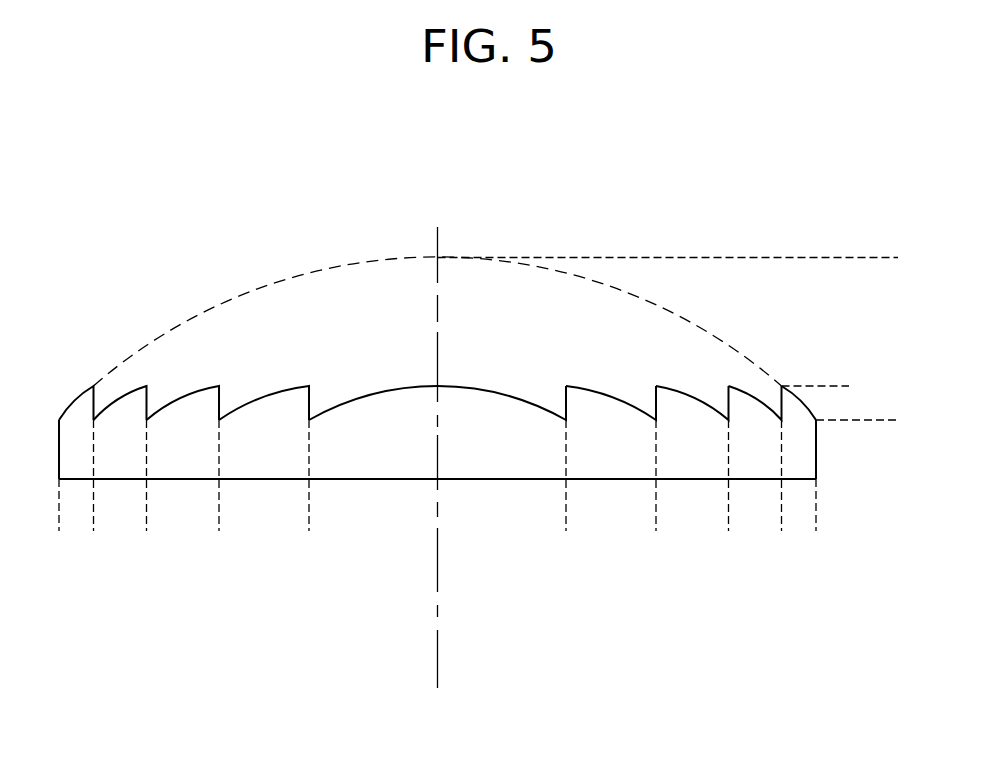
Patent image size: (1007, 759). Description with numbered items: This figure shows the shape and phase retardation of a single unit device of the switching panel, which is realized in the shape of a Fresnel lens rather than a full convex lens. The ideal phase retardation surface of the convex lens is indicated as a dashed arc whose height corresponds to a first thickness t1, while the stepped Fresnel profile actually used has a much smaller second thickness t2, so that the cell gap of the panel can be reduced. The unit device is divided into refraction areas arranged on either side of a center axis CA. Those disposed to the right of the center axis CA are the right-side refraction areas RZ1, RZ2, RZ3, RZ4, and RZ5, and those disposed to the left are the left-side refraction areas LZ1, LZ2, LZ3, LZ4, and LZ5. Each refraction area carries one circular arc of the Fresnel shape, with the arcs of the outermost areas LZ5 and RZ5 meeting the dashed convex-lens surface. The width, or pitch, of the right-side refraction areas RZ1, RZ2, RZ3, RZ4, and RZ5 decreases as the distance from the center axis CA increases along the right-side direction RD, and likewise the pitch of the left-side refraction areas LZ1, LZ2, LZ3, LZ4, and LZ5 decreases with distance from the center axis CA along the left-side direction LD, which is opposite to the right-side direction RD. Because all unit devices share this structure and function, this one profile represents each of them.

The left-side refraction area LZ1 is at (438, 524).
The left-side refraction area LZ2 is at (219, 524).
The left-side refraction area LZ3 is at (146, 524).
The left-side refraction area LZ4 is at (94, 524).
The left-side refraction area LZ5 is at (94, 524).
The right-side refraction area RZ1 is at (566, 524).
The right-side refraction area RZ2 is at (566, 524).
The right-side refraction area RZ3 is at (656, 524).
The right-side refraction area RZ4 is at (728, 524).
The right-side refraction area RZ5 is at (782, 524).
The center axis CA is at (438, 653).
The left-side direction LD is at (422, 588).
The right-side direction RD is at (455, 588).
The first thickness t1 is at (894, 258).
The second thickness t2 is at (844, 386).